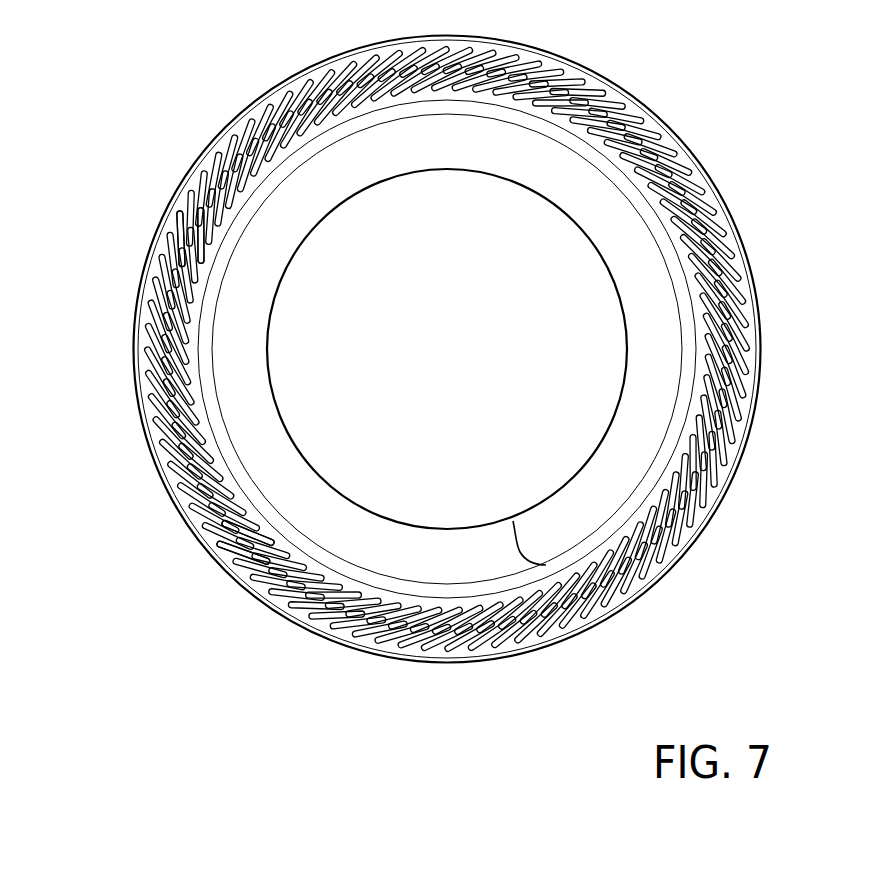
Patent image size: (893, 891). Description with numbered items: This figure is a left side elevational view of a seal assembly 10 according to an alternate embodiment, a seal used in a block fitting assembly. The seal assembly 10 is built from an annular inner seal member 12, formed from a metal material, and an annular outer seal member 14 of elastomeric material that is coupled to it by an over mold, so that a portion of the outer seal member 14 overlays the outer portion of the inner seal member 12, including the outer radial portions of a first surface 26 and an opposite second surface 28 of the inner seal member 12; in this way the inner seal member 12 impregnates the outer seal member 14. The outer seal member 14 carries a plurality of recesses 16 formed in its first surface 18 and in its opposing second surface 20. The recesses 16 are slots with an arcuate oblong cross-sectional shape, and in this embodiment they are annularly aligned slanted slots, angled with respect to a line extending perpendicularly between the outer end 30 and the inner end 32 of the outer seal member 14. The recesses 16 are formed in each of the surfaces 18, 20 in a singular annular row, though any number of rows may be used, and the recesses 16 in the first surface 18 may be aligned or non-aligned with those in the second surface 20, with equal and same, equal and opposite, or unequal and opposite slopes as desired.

The seal assembly 10 is at (200, 74).
The inner seal member 12 is at (518, 543).
The outer seal member 14 is at (247, 230).
The recesses 16 is at (192, 503).
The first surface 18 is at (234, 550).
The second surface 20 is at (267, 602).
The first surface of the inner seal member 26 is at (546, 522).
The second surface of the inner seal member 28 is at (440, 172).
The outer end 30 is at (668, 570).
The inner end 32 is at (216, 357).